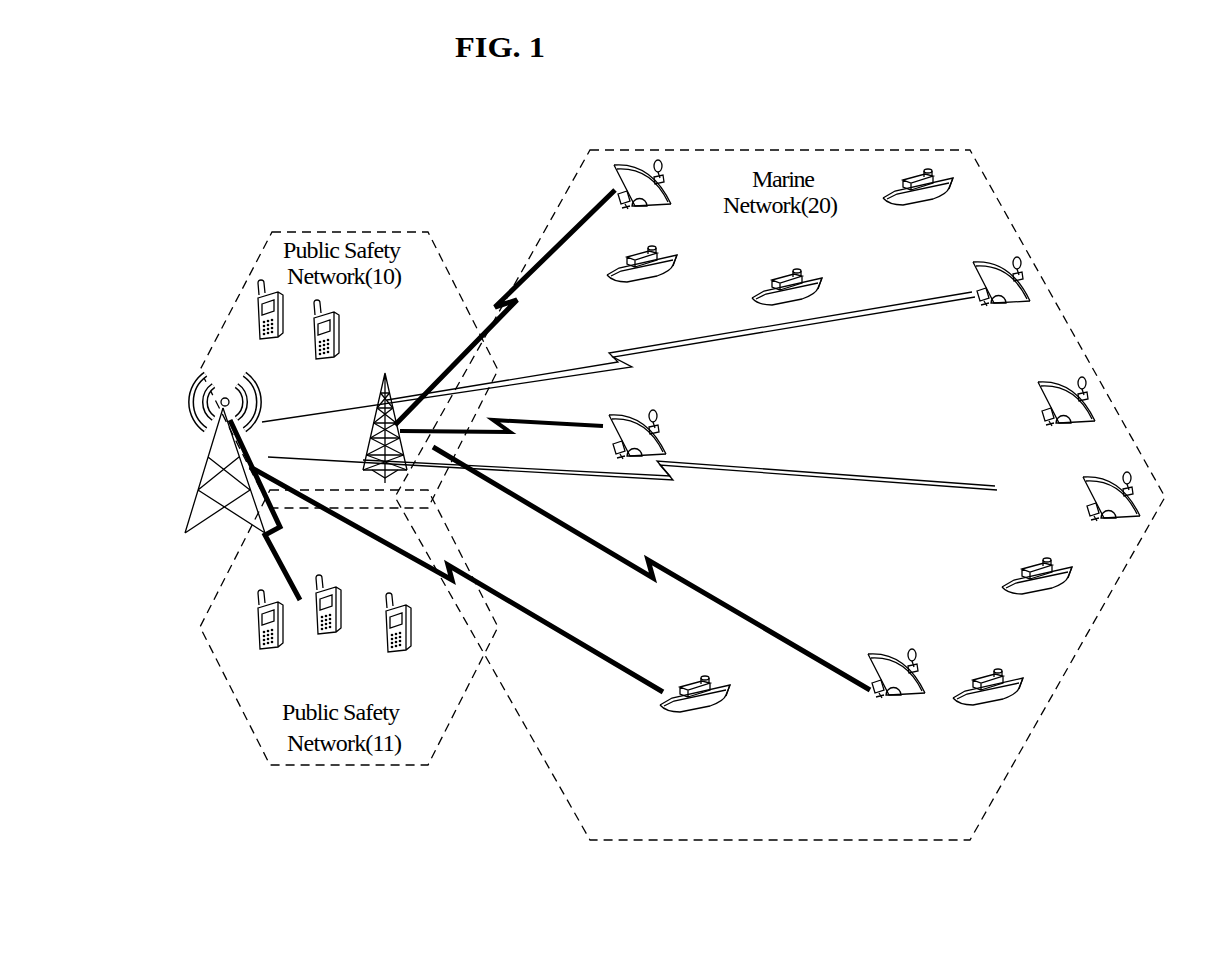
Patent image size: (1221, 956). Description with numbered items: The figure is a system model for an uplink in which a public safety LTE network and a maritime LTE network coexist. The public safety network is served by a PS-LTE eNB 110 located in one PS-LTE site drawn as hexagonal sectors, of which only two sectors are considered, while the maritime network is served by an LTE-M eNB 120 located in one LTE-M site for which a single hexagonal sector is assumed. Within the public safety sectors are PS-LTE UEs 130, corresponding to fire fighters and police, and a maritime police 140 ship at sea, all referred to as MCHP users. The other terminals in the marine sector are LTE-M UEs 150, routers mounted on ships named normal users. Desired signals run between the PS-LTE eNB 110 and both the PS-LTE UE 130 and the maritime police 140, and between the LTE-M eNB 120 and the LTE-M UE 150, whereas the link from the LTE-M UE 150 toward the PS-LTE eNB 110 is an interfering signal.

The PS-LTE eNB 110 is at (210, 483).
The LTE-M eNB 120 is at (385, 395).
The PS-LTE UE 130 is at (262, 303).
The maritime police 140 is at (700, 700).
The LTE-M UE 150 is at (907, 692).